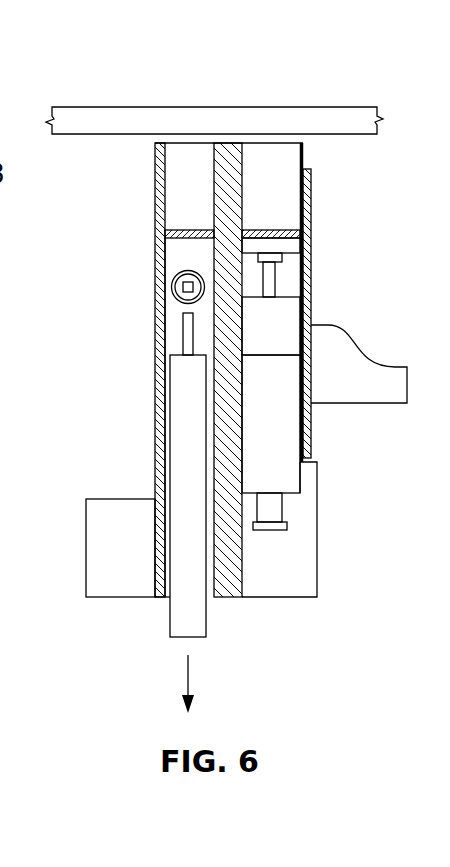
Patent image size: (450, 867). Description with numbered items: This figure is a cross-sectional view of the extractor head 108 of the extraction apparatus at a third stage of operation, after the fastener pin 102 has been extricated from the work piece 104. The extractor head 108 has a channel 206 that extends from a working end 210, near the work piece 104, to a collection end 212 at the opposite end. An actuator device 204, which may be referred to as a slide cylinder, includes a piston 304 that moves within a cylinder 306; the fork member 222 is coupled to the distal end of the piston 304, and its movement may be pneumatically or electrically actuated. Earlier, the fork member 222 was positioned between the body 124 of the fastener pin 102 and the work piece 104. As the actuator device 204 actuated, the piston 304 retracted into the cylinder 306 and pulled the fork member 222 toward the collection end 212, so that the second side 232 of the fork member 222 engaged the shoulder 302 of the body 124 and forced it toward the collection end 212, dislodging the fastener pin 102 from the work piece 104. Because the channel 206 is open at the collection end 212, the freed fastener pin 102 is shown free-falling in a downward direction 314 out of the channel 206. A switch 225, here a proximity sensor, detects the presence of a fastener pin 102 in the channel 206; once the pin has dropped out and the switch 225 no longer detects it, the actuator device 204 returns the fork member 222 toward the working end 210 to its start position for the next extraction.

The work piece 104 is at (125, 113).
The fork member 222 is at (190, 230).
The working end 210 is at (307, 158).
The extractor head 108 is at (338, 200).
The second side 232 is at (165, 243).
The switch 225 is at (171, 287).
The shoulder 302 is at (177, 352).
The body 124 is at (180, 373).
The fastener pin 102 is at (182, 415).
The channel 206 is at (167, 475).
The actuator device 204 is at (293, 425).
The piston 304 is at (270, 278).
The cylinder 306 is at (277, 328).
The collection end 212 is at (230, 613).
The downward direction 314 is at (185, 683).